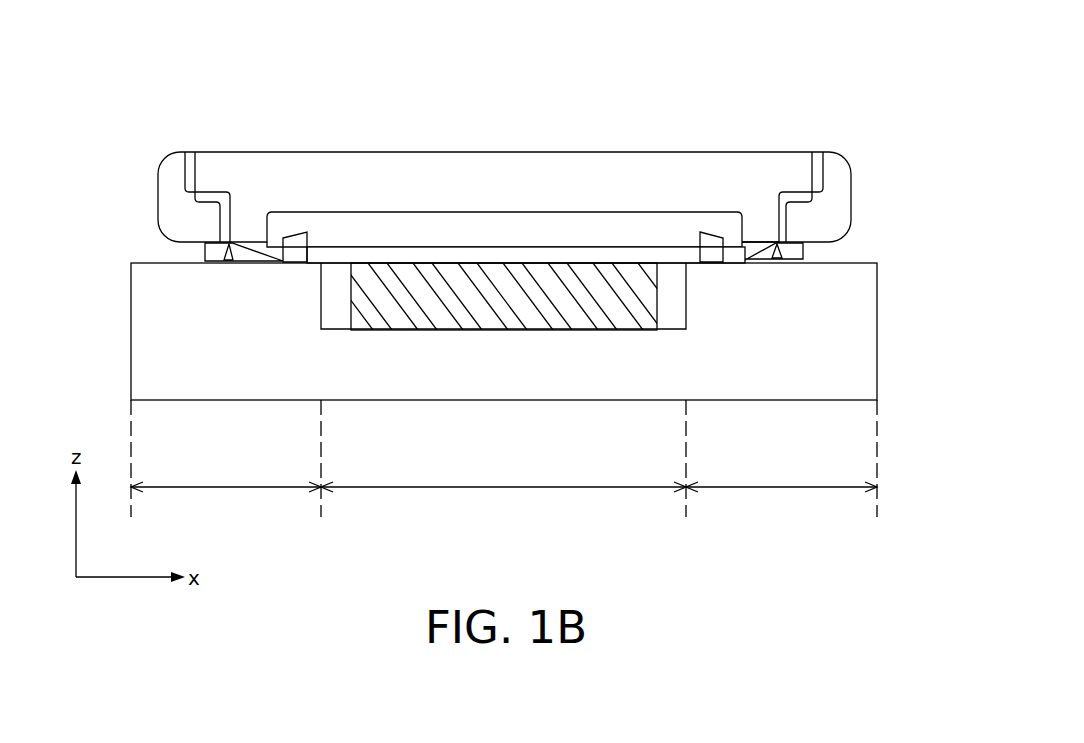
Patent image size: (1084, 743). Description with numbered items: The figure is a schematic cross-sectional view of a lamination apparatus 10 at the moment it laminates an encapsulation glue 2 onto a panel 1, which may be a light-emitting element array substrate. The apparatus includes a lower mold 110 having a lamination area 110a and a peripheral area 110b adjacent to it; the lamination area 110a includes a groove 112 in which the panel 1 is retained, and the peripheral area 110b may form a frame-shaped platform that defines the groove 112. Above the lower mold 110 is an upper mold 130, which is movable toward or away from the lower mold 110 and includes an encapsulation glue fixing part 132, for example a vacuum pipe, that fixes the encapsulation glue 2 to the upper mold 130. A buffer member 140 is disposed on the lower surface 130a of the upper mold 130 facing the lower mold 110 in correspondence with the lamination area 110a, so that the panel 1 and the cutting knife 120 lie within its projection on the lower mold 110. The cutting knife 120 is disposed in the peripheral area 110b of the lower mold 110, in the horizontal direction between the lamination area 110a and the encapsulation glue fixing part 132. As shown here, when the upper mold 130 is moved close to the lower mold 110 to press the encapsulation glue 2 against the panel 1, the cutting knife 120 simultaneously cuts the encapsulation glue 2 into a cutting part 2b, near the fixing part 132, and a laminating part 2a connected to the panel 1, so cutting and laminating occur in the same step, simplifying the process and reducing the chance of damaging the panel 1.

The lamination apparatus 10 is at (510, 297).
The panel 1 is at (593, 318).
The encapsulation glue 2 is at (538, 152).
The laminating part 2a is at (604, 250).
The cutting part 2b is at (250, 252).
The lower mold 110 is at (504, 391).
The lamination area 110a is at (503, 500).
The peripheral area 110b is at (504, 459).
The groove 112 is at (334, 292).
The cutting knife 120 is at (293, 263).
The upper mold 130 is at (396, 180).
The lower surface 130a is at (748, 250).
The encapsulation glue fixing part 132 is at (229, 254).
The buffer member 140 is at (548, 222).